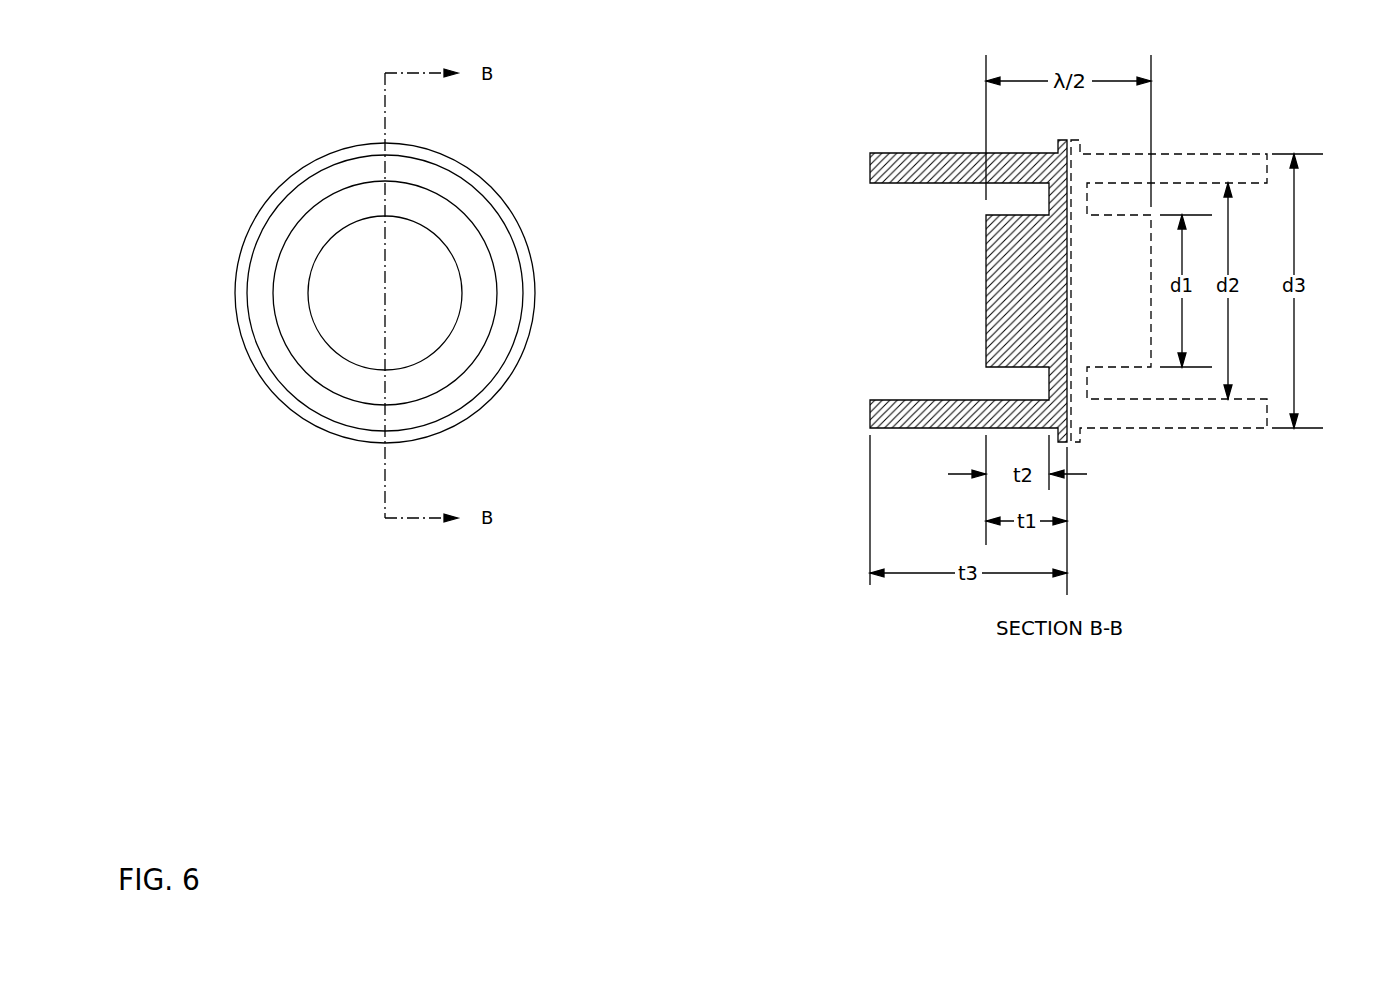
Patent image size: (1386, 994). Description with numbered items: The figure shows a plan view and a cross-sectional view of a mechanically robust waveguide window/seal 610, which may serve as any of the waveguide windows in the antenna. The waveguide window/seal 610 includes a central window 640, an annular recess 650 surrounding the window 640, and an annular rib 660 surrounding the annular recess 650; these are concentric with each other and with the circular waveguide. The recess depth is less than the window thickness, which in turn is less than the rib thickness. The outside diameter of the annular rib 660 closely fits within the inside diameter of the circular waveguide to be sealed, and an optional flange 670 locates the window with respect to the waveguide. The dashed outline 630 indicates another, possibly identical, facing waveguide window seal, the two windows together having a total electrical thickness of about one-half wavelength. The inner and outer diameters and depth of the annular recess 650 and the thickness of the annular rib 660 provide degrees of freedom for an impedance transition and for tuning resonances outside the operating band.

The waveguide window/seal 610 is at (245, 346).
The dashed outline 630 is at (1208, 428).
The central window 640 is at (458, 273).
The annular recess 650 is at (457, 343).
The annular rib 660 is at (490, 195).
The flange 670 is at (1058, 142).